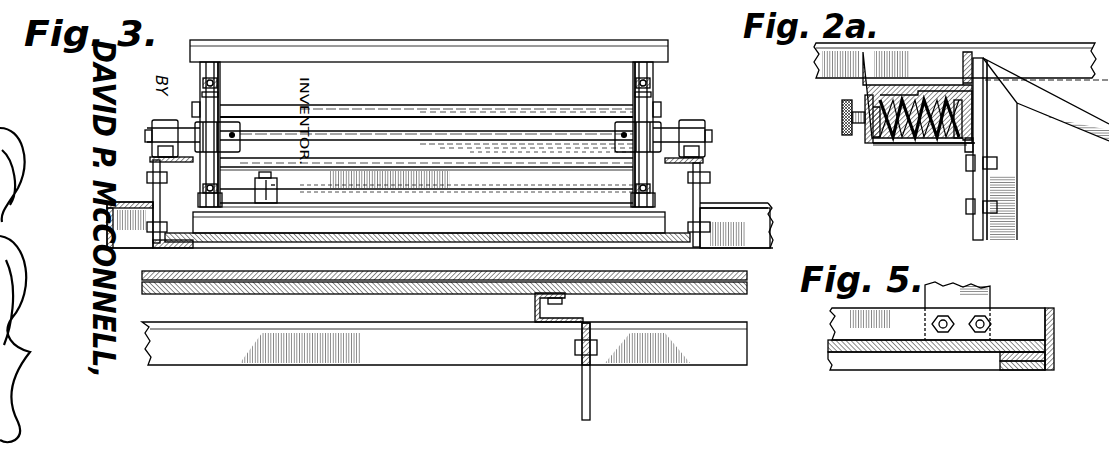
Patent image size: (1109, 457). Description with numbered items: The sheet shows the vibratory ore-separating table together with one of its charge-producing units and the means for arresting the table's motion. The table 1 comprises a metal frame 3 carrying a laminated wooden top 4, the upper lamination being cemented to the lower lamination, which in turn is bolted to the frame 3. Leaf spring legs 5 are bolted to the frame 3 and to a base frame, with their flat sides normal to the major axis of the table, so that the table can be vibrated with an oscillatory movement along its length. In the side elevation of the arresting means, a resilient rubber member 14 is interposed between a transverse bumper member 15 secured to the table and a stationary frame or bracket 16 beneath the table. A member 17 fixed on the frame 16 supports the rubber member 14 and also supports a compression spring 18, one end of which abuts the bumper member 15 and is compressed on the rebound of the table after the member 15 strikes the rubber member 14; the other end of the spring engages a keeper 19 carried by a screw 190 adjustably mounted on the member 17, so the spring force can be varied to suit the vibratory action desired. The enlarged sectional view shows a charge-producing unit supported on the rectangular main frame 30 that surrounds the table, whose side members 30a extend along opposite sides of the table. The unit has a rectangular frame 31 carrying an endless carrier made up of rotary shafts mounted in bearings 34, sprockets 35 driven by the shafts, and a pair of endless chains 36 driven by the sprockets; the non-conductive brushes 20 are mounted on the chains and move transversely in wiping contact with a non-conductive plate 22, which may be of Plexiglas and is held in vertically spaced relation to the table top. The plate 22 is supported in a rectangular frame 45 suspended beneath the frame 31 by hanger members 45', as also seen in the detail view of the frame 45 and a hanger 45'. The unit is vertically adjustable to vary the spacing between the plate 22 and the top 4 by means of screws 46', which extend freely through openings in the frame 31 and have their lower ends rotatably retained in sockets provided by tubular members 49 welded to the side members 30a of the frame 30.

In FIG. 3, the table 1 is at (361, 268).
In FIG. 3, the metal frame 3 is at (363, 366).
In FIG. 2A, the metal frame 3 is at (812, 83).
In FIG. 3, the laminated wooden top 4 is at (605, 272).
In FIG. 3, the leaf spring legs 5 is at (190, 200).
In FIG. 2A, the resilient rubber member 14 is at (981, 123).
In FIG. 2A, the transverse bumper member 15 is at (968, 120).
In FIG. 2A, the stationary frame or bracket 16 is at (1004, 169).
In FIG. 2A, the member 17 is at (974, 186).
In FIG. 2A, the compression spring 18 is at (926, 130).
In FIG. 2A, the keeper 19 is at (880, 141).
In FIG. 2A, the screw 190 is at (856, 132).
In FIG. 3, the non-conductive brushes 20 is at (503, 42).
In FIG. 3, the plates 22 is at (496, 240).
In FIG. 5, the plates 22 is at (872, 350).
In FIG. 3, the rectangular main frame 30 is at (768, 203).
In FIG. 3, the side members 30a is at (770, 223).
In FIG. 3, the rectangular frame 31 is at (703, 161).
In FIG. 3, the bearings 34 is at (166, 118).
In FIG. 3, the sprockets 35 is at (220, 96).
In FIG. 3, the endless chains 36 is at (204, 80).
In FIG. 3, the rectangular frame 45 is at (144, 237).
In FIG. 5, the rectangular frame 45 is at (952, 325).
In FIG. 3, the hanger members 45' is at (418, 203).
In FIG. 5, the hanger members 45' is at (979, 306).
In FIG. 3, the screws 46' is at (276, 143).
In FIG. 3, the tubular members 49 is at (272, 186).